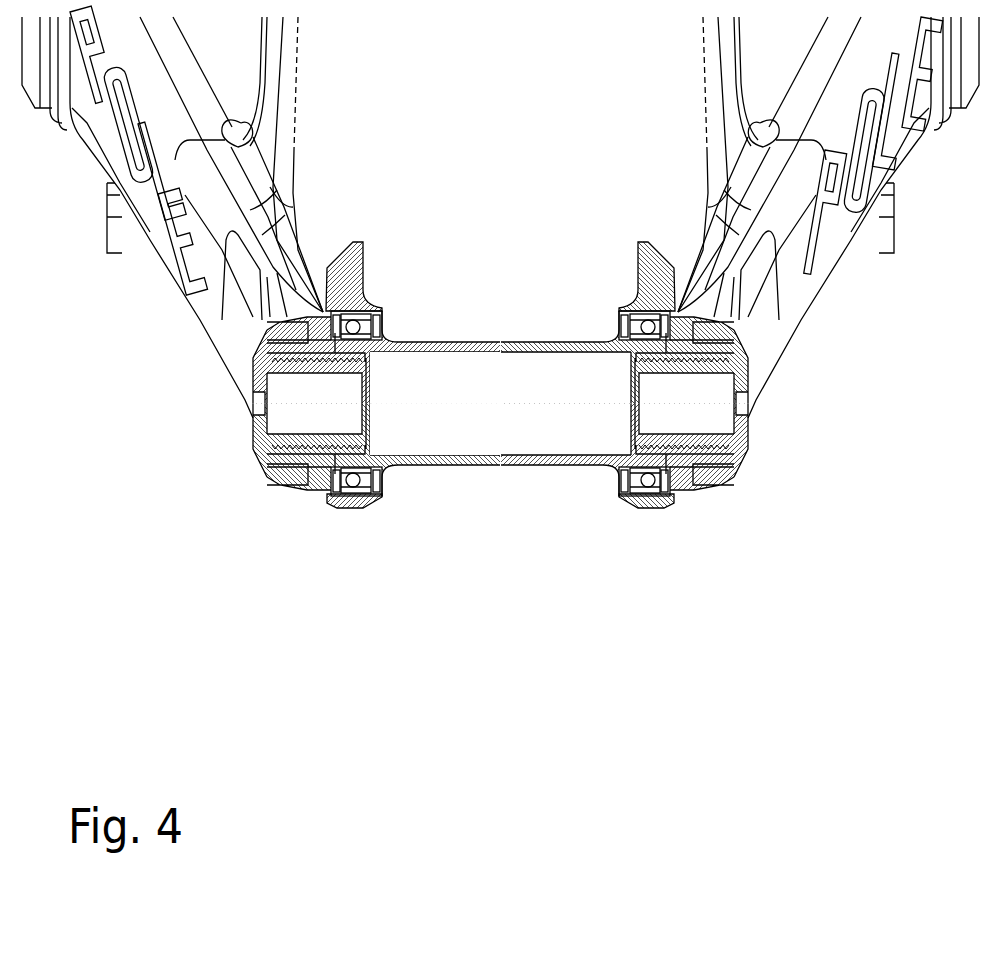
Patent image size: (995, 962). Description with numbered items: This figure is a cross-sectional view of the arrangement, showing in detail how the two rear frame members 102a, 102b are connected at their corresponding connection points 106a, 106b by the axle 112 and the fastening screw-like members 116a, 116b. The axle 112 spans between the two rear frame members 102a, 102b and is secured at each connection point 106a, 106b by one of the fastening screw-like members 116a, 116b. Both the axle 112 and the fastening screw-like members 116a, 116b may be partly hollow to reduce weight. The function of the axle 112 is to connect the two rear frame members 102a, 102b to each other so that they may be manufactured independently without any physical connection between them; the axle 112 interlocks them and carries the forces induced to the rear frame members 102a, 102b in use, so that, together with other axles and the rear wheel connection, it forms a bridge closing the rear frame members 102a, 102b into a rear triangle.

The rear frame member 102a is at (200, 335).
The rear frame member 102b is at (800, 345).
The connection point 106a is at (302, 495).
The connection point 106b is at (703, 487).
The axle 112 is at (443, 440).
The fastening screw-like member 116a is at (257, 480).
The fastening screw-like member 116b is at (748, 453).